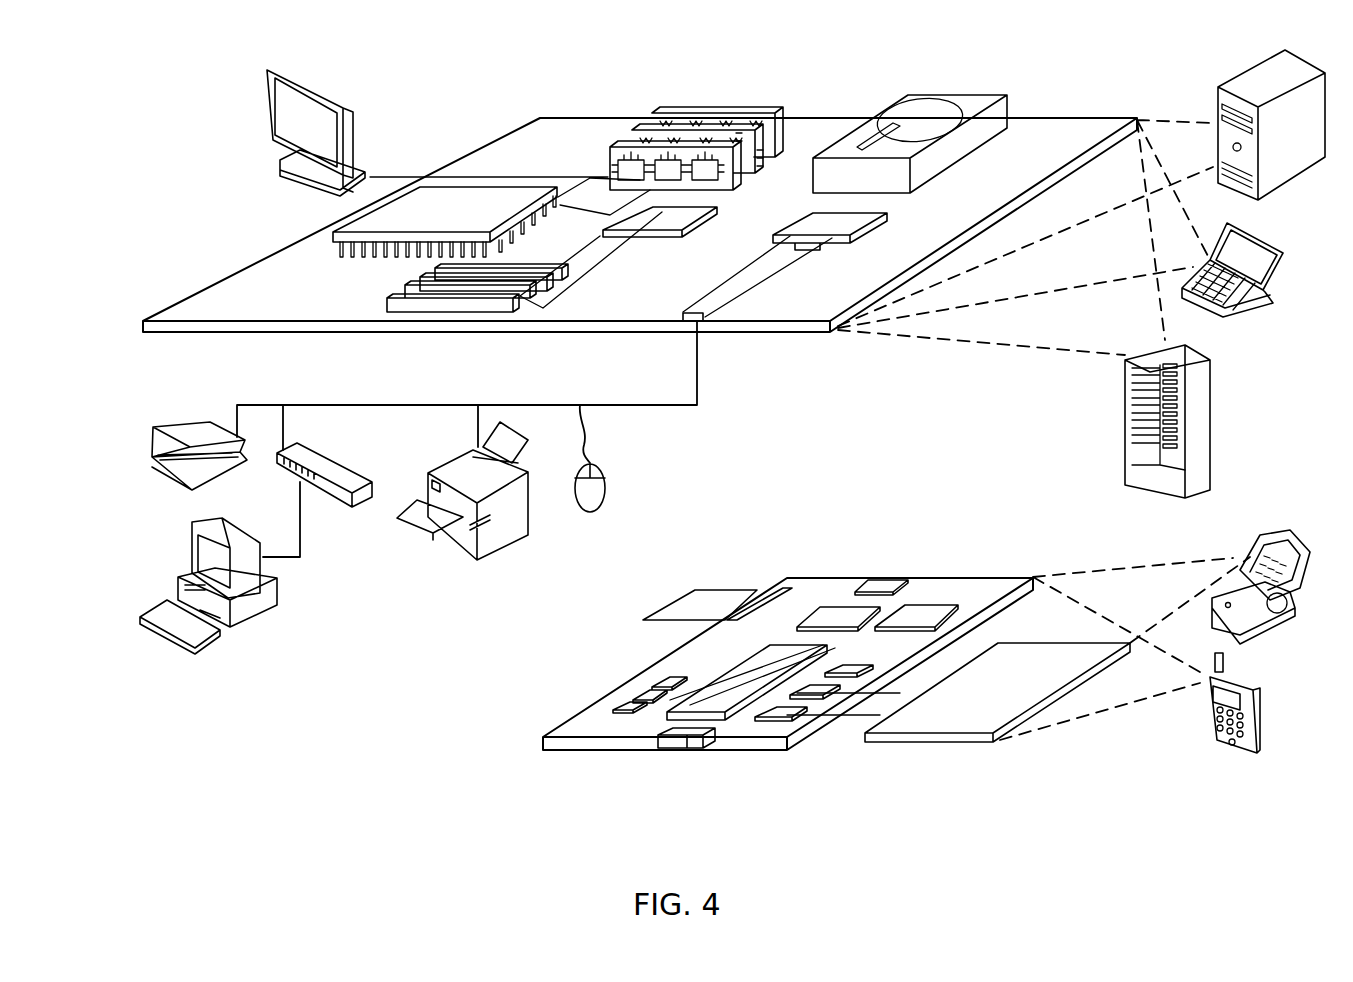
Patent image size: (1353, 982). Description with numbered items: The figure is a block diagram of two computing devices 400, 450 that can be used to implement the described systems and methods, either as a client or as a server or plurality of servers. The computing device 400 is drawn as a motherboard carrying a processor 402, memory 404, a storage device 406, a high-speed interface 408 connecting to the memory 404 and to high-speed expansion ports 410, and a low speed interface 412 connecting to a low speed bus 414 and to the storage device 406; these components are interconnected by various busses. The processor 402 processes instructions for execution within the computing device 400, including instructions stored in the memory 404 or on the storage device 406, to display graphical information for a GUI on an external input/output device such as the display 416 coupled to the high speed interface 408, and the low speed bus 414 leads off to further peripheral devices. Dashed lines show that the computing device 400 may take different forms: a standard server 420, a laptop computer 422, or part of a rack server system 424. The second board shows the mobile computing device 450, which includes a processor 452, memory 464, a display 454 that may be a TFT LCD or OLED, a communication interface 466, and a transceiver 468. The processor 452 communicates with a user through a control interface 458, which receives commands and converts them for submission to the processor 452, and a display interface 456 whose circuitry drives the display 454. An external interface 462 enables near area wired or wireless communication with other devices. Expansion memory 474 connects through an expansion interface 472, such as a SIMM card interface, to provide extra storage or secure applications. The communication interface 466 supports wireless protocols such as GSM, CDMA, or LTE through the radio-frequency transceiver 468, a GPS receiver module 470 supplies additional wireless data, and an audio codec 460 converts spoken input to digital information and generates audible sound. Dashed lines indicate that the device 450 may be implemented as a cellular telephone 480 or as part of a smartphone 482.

The computing device 400 is at (462, 92).
The processor 402 is at (336, 234).
The memory 404 is at (672, 108).
The storage device 406 is at (898, 114).
The high-speed interface 408 is at (638, 220).
The high-speed expansion ports 410 is at (389, 302).
The low speed interface 412 is at (814, 222).
The low speed bus 414 is at (700, 322).
The display 416 is at (272, 72).
The standard server 420 is at (1218, 100).
The laptop computer 422 is at (1282, 250).
The rack server system 424 is at (1125, 448).
The computing device 450 is at (514, 749).
The processor 452 is at (716, 714).
The display 454 is at (960, 727).
The display interface 456 is at (790, 715).
The control interface 458 is at (822, 692).
The audio codec 460 is at (852, 670).
The external interface 462 is at (686, 740).
The memory 464 is at (645, 702).
The communication interface 466 is at (828, 612).
The transceiver 468 is at (910, 610).
The GPS receiver module 470 is at (890, 584).
The expansion interface 472 is at (765, 600).
The expansion memory 474 is at (695, 598).
The cellular telephone 480 is at (1250, 552).
The smartphone 482 is at (1207, 712).